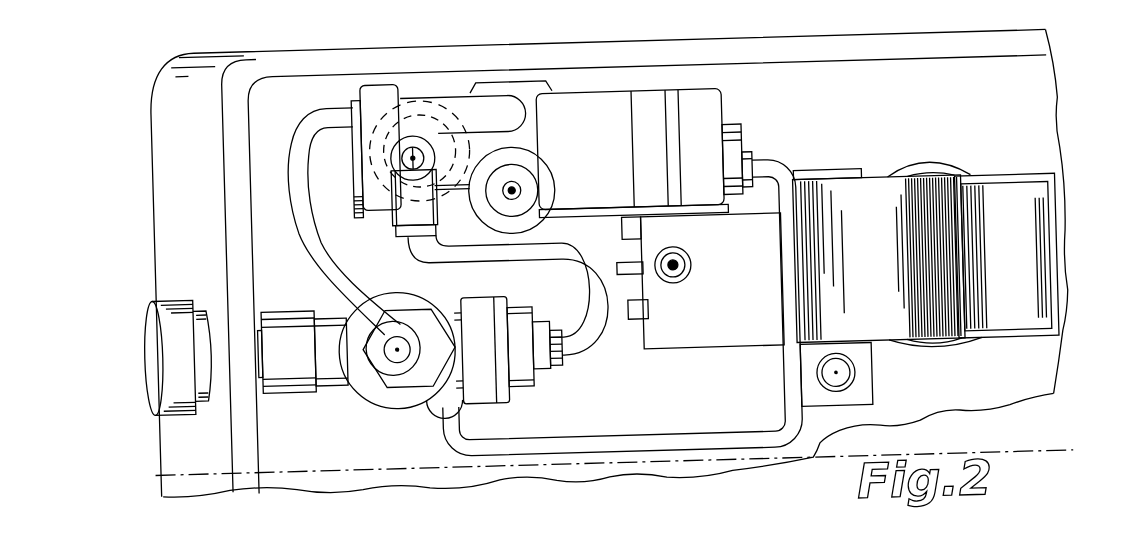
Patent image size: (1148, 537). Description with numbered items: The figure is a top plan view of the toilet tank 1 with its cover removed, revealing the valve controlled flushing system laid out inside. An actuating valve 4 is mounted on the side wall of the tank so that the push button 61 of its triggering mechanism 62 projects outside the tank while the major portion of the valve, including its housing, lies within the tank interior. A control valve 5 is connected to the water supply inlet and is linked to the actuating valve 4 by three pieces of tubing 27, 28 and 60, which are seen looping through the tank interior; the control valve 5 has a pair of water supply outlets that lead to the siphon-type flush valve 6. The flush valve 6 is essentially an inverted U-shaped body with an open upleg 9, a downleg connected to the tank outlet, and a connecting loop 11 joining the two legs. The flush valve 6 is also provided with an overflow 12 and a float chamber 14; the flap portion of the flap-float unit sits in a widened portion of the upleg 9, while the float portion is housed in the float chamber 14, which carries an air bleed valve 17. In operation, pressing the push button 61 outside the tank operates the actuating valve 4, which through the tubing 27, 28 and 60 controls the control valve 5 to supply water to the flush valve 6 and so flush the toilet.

The toilet tank 1 is at (145, 464).
The actuating valve 4 is at (486, 360).
The control valve 5 is at (600, 170).
The siphon-type flush valve 6 is at (883, 284).
The upleg 9 is at (846, 176).
The connecting loop 11 is at (890, 185).
The overflow 12 is at (1017, 190).
The float chamber 14 is at (707, 350).
The air bleed valve 17 is at (692, 267).
The tubing 27 is at (582, 256).
The tubing 28 is at (785, 165).
The tubing 60 is at (333, 250).
The push button 61 is at (192, 351).
The triggering mechanism 62 is at (295, 354).